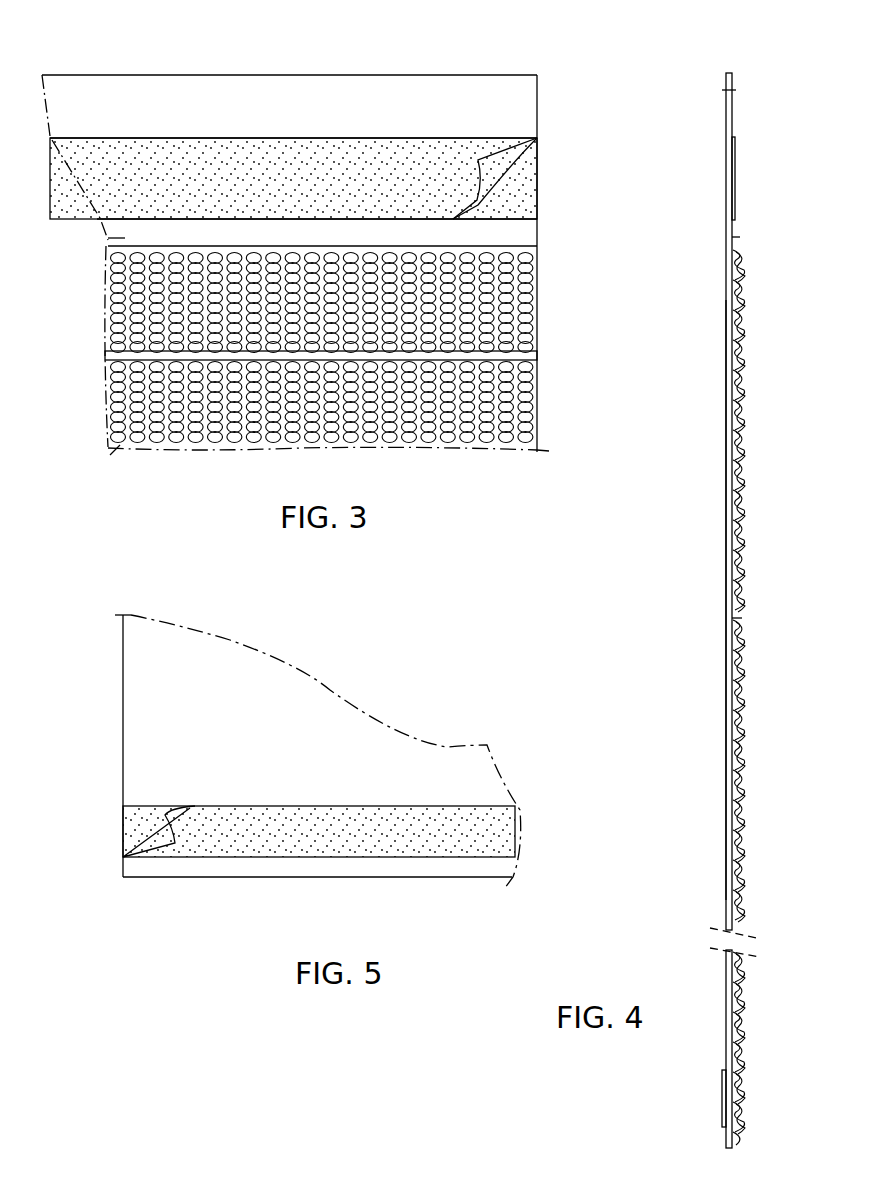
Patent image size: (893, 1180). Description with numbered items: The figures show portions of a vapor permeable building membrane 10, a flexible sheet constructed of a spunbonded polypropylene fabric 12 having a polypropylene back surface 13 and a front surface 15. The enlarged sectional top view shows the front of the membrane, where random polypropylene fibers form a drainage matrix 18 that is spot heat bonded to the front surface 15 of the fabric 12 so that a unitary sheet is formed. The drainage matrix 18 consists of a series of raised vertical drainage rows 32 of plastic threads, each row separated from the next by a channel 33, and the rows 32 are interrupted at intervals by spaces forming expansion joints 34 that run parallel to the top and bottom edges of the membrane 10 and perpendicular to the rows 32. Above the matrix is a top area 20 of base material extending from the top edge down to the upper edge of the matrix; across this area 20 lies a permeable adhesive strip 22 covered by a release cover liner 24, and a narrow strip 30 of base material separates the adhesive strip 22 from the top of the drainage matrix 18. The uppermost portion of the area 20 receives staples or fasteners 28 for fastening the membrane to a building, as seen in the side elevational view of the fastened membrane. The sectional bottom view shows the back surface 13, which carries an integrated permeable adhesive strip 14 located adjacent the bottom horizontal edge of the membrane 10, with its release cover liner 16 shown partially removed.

In FIG. 4, the building membrane 10 is at (755, 110).
In FIG. 4, the spunbonded polypropylene fabric 12 is at (733, 122).
In FIG. 5, the polypropylene back surface 13 is at (155, 698).
In FIG. 4, the polypropylene back surface 13 is at (728, 440).
In FIG. 5, the integrated permeable adhesive strip 14 is at (133, 822).
In FIG. 4, the integrated permeable adhesive strip 14 is at (723, 1088).
In FIG. 3, the front surface 15 is at (524, 236).
In FIG. 4, the front surface 15 is at (733, 237).
In FIG. 5, the release cover liner 16 is at (163, 842).
In FIG. 3, the drainage matrix 18 is at (524, 314).
In FIG. 4, the drainage matrix 18 is at (746, 386).
In FIG. 3, the upper top area of base material 20 is at (574, 75).
In FIG. 3, the permeable adhesive strip 22 is at (523, 186).
In FIG. 4, the permeable adhesive strip 22 is at (735, 198).
In FIG. 3, the release cover liner 24 is at (493, 165).
In FIG. 4, the staples or fasteners 28 is at (738, 88).
In FIG. 3, the strip of base material 30 is at (110, 240).
In FIG. 3, the drainage rows 32 is at (152, 445).
In FIG. 3, the channel 33 is at (150, 405).
In FIG. 3, the expansion joints 34 is at (105, 352).
In FIG. 4, the expansion joints 34 is at (735, 618).